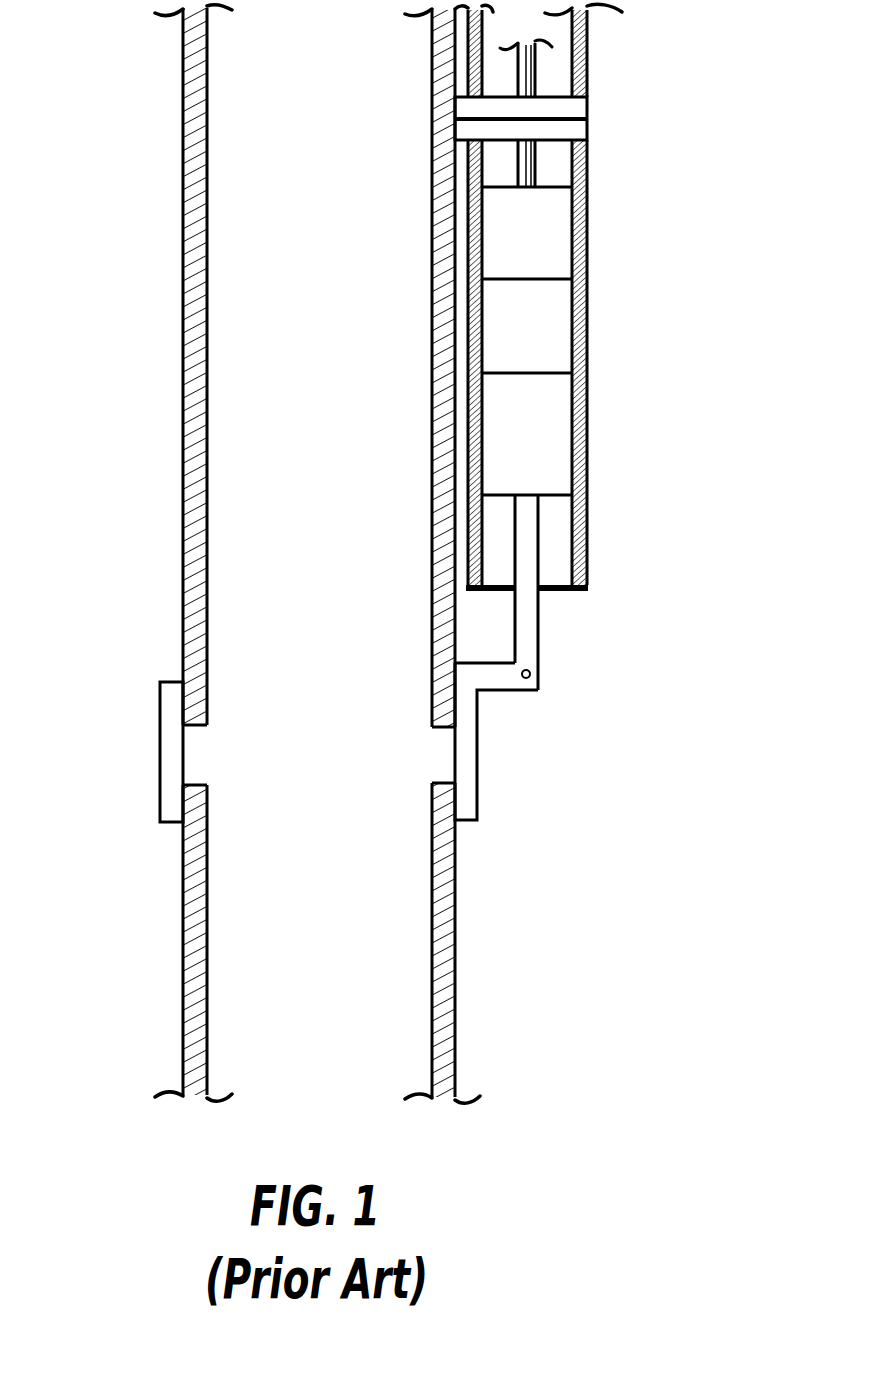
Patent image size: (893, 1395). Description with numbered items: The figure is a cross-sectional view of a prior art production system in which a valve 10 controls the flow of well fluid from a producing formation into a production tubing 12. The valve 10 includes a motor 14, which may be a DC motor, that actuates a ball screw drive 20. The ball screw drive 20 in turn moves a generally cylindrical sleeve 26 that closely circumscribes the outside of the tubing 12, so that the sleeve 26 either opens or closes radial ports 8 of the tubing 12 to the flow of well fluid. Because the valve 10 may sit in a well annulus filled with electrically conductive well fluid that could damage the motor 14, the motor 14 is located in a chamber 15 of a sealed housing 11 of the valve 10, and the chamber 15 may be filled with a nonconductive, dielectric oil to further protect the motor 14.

The radial ports 8 is at (453, 750).
The valve 10 is at (598, 272).
The sealed housing 11 is at (587, 507).
The production tubing 12 is at (183, 105).
The motor 14 is at (558, 222).
The chamber 15 is at (585, 155).
The ball screw drive 20 is at (558, 425).
The sleeve 26 is at (170, 735).